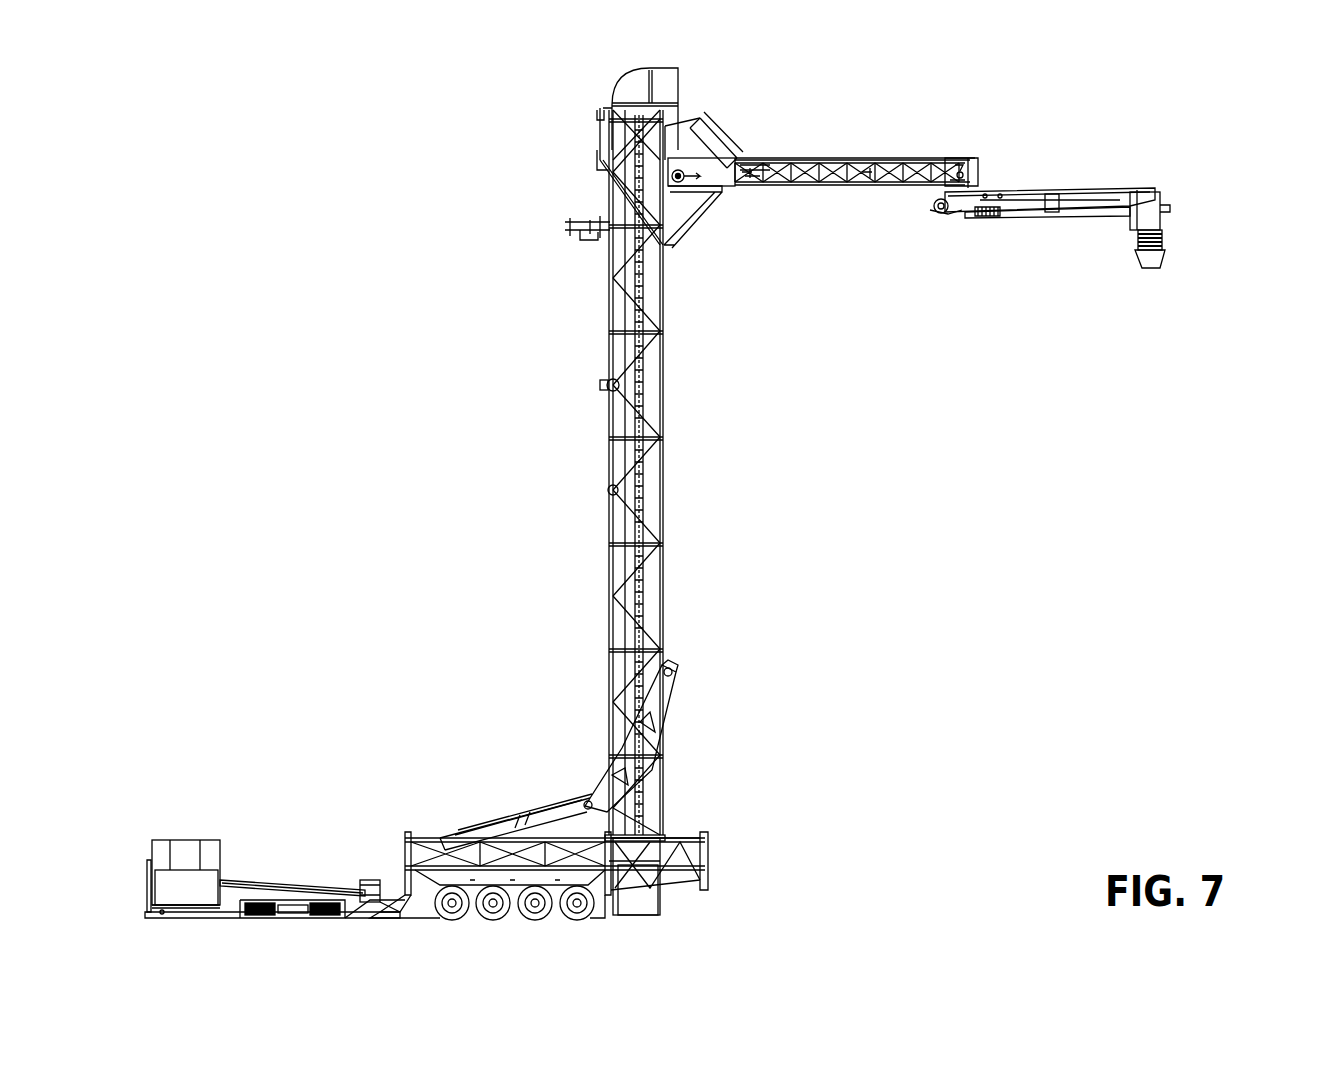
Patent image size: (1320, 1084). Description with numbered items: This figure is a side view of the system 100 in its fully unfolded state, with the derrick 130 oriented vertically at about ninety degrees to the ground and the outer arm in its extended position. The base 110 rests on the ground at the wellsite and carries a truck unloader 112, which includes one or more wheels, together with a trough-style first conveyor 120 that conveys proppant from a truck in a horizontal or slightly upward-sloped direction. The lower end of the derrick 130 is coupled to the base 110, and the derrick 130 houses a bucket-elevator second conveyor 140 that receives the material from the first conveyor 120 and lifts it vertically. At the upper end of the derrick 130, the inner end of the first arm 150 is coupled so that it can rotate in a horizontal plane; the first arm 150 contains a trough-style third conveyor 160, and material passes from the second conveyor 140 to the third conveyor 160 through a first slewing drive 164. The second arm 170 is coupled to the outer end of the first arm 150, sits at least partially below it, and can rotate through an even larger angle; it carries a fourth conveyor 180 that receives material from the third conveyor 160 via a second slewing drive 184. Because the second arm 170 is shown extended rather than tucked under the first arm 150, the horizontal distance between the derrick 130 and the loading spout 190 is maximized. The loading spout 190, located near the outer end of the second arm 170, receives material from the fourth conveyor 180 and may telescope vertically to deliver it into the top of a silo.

The system 100 is at (338, 90).
The base 110 is at (292, 888).
The truck unloader 112 is at (516, 905).
The first conveyor 120 is at (560, 803).
The derrick 130 is at (664, 578).
The second conveyor 140 is at (648, 505).
The first arm 150 is at (830, 160).
The third conveyor 160 is at (878, 160).
The first slewing drive 164 is at (679, 176).
The second arm 170 is at (1076, 215).
The fourth conveyor 180 is at (1076, 190).
The second slewing drive 184 is at (976, 186).
The loading spout 190 is at (1165, 238).